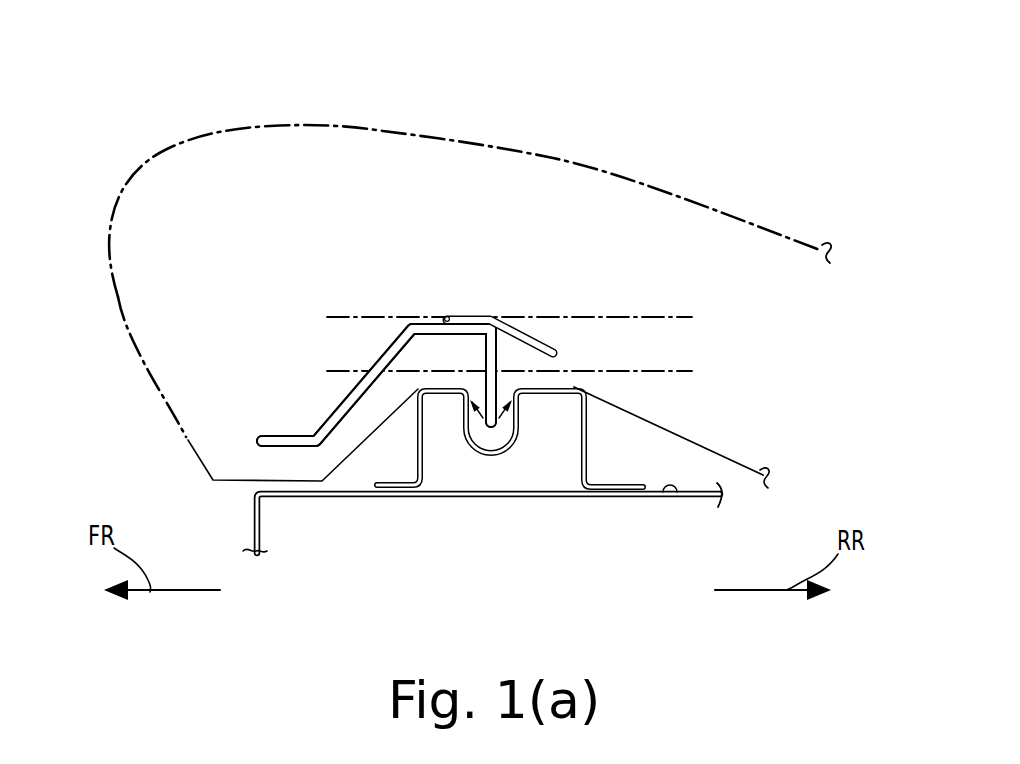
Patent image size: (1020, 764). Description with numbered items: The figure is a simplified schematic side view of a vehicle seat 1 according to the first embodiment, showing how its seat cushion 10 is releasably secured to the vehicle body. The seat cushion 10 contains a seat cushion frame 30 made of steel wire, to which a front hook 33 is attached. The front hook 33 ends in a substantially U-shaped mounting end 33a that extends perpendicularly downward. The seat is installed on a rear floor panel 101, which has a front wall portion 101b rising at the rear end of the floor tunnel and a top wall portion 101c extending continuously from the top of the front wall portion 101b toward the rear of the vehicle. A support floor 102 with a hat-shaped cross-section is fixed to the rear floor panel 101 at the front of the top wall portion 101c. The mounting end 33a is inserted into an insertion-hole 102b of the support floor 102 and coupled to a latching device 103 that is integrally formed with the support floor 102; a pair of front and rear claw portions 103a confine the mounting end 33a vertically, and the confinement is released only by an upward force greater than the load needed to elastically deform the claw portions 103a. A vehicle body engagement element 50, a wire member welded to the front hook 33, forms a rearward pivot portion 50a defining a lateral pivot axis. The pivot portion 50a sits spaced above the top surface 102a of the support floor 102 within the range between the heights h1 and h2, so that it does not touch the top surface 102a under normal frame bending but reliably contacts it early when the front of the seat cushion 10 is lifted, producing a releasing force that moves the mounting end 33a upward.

The vehicle seat 1 is at (668, 182).
The seat cushion 10 is at (492, 147).
The seat cushion frame 30 is at (264, 432).
The front hook 33 is at (347, 390).
The mounting end 33a is at (485, 456).
The vehicle body engagement element 50 is at (497, 314).
The pivot portion 50a is at (565, 346).
The rear floor panel 101 is at (697, 487).
The front wall portion 101b is at (254, 530).
The top wall portion 101c is at (677, 493).
The support floor 102 is at (400, 454).
The top surface 102a is at (509, 390).
The insertion-hole 102b is at (503, 380).
The latching device 103 is at (513, 458).
The claw portions 103a is at (475, 448).
The height h1 is at (685, 371).
The height h2 is at (660, 318).